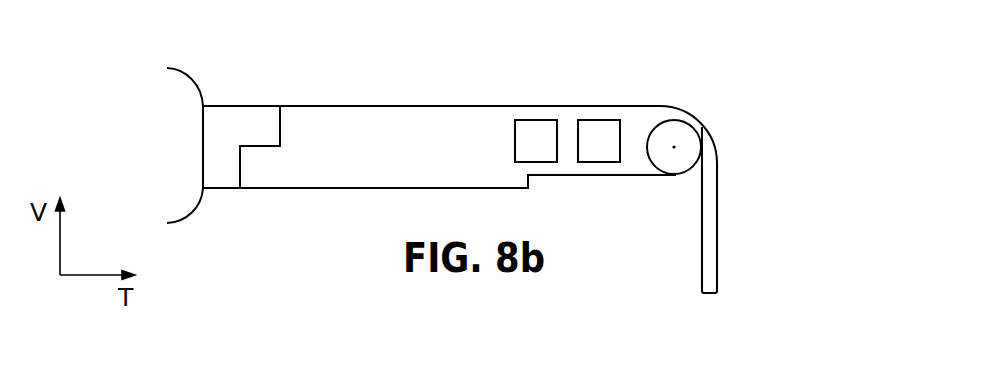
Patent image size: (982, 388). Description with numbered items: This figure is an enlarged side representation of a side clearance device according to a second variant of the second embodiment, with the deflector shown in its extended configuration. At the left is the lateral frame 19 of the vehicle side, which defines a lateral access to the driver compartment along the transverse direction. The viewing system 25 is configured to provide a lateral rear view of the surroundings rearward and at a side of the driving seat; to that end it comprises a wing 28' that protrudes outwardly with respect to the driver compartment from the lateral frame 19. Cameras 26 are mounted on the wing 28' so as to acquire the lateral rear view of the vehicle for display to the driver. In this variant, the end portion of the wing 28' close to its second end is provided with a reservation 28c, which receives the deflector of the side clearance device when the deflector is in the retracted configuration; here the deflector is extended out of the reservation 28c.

The lateral frame 19 is at (190, 73).
The wing 28' is at (460, 99).
The reservation 28c is at (612, 177).
The camera 26 is at (536, 120).
The viewing system 25 is at (663, 73).